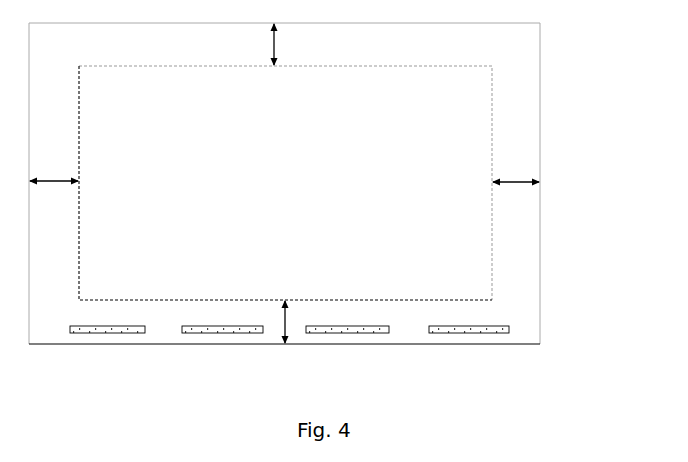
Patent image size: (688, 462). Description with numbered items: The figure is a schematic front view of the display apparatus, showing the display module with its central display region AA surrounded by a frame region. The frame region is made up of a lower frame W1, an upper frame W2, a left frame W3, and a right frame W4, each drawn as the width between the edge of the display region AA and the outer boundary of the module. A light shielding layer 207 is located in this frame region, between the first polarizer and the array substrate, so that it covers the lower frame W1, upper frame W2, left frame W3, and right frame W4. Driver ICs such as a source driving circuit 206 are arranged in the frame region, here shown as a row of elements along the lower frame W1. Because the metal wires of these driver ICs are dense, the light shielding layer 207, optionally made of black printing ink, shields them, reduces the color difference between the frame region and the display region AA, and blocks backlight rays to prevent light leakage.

The source driving circuit 206 is at (473, 329).
The light shielding layer 207 is at (520, 100).
The display region AA is at (285, 183).
The lower frame W1 is at (266, 322).
The upper frame W2 is at (251, 45).
The left frame W3 is at (54, 165).
The right frame W4 is at (516, 166).